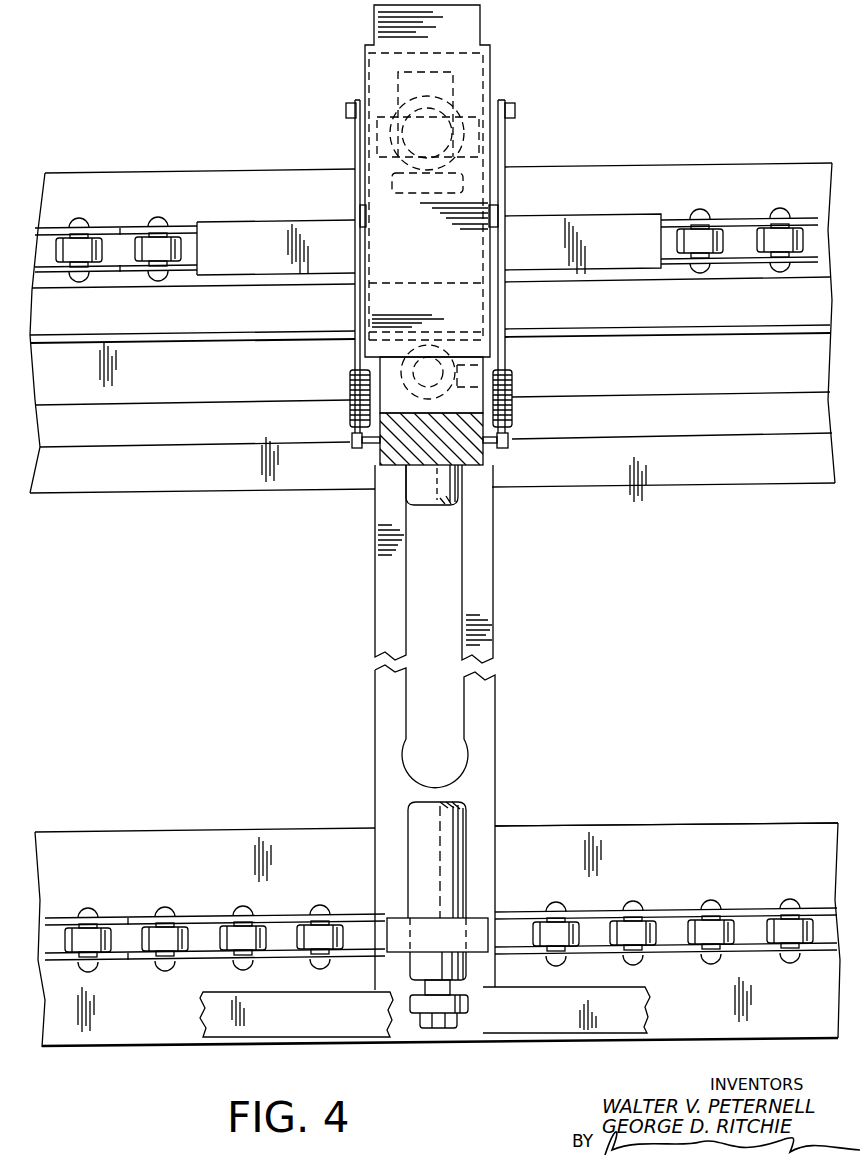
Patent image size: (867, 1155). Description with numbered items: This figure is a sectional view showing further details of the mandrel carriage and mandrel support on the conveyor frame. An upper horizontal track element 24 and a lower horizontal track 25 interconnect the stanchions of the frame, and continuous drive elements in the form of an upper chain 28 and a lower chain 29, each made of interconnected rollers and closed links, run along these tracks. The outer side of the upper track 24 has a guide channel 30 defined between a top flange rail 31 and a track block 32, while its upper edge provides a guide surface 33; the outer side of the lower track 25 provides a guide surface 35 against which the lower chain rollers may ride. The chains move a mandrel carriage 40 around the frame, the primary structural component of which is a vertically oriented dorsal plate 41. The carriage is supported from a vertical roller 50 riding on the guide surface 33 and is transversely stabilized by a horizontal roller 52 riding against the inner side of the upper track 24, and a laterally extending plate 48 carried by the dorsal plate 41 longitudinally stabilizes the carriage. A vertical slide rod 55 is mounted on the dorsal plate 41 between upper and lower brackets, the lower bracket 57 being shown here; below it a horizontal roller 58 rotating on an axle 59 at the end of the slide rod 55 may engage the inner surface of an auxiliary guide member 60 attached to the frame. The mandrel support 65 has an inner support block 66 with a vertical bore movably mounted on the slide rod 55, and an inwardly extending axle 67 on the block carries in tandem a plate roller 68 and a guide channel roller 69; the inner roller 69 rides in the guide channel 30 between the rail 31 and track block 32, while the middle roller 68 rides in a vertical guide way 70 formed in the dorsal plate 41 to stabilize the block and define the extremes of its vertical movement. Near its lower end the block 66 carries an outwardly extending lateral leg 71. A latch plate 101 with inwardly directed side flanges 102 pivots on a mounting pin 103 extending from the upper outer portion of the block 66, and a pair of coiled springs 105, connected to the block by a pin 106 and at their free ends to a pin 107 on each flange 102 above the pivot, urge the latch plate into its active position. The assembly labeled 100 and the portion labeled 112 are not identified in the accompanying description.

The horizontal track element 24 is at (187, 184).
The lower horizontal track 25 is at (208, 838).
The upper conveyor drive element 28 is at (76, 224).
The lower conveyor drive element 29 is at (176, 903).
The guide channel 30 is at (203, 393).
The top flange rail 31 is at (193, 348).
The track block 32 is at (205, 435).
The guide surface 33 is at (612, 165).
The guide surface 35 is at (618, 838).
The mandrel carriage 40 is at (500, 563).
The dorsal plate 41 is at (383, 556).
The laterally extending plate 48 is at (557, 228).
The vertical roller 50 is at (460, 120).
The horizontal roller 52 is at (395, 182).
The slide rod 55 is at (456, 486).
The lower bracket 57 is at (485, 918).
The horizontal roller 58 is at (435, 1008).
The axle 59 is at (452, 992).
The auxiliary guide member 60 is at (300, 1022).
The mandrel support 65 is at (291, 481).
The support block 66 is at (388, 379).
The axle 67 is at (488, 382).
The plate roller 68 is at (500, 366).
The guide channel roller 69 is at (510, 350).
The vertical guide way 70 is at (406, 572).
The lateral leg 71 is at (478, 451).
The housing 100 is at (429, 178).
The latch plate 101 is at (470, 36).
The side flange 102 is at (362, 80).
The mounting pin 103 is at (362, 212).
The coiled spring 105 is at (352, 412).
The pin 106 is at (536, 434).
The pin 107 is at (347, 110).
The top portion 112 is at (466, 15).